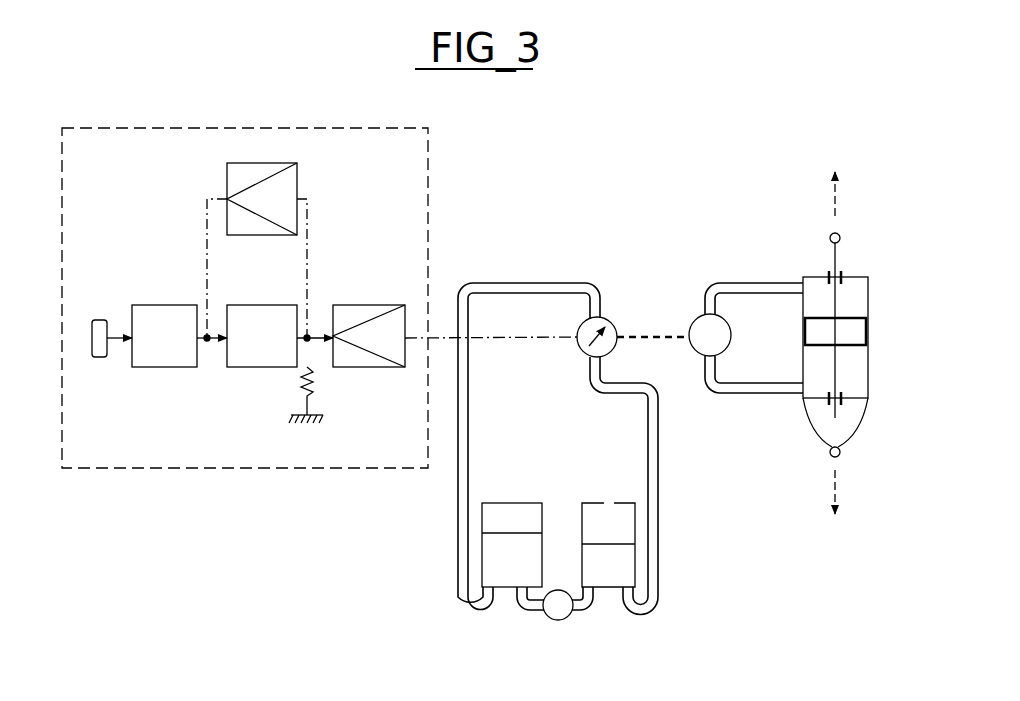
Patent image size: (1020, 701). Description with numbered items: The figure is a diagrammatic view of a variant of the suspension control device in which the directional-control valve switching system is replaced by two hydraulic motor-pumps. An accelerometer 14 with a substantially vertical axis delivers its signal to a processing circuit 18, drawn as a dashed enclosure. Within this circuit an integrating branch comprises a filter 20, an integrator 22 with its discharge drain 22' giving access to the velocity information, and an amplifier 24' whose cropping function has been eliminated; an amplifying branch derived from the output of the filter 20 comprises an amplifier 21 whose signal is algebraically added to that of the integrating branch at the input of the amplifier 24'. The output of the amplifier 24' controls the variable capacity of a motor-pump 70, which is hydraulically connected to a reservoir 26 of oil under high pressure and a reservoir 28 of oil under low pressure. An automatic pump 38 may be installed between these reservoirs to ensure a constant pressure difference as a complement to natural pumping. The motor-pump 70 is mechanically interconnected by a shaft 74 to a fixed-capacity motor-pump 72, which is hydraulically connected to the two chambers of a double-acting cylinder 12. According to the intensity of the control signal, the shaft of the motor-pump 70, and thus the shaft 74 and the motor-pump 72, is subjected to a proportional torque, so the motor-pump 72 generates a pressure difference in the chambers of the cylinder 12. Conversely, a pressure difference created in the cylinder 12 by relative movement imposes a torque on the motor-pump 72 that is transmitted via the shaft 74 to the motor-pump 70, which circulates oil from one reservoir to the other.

The double-acting cylinder 12 is at (872, 292).
The accelerometer 14 is at (101, 325).
The processing circuit 18 is at (185, 470).
The filter 20 is at (168, 322).
The amplifier 21 is at (286, 184).
The integrator 22 is at (280, 318).
The discharge drain 22' is at (279, 395).
The amplifier 24' is at (369, 318).
The high pressure reservoir 26 is at (494, 568).
The low pressure reservoir 28 is at (626, 579).
The automatic pump 38 is at (558, 622).
The motor-pump 70 is at (611, 318).
The motor-pump 72 is at (695, 316).
The shaft 74 is at (650, 332).